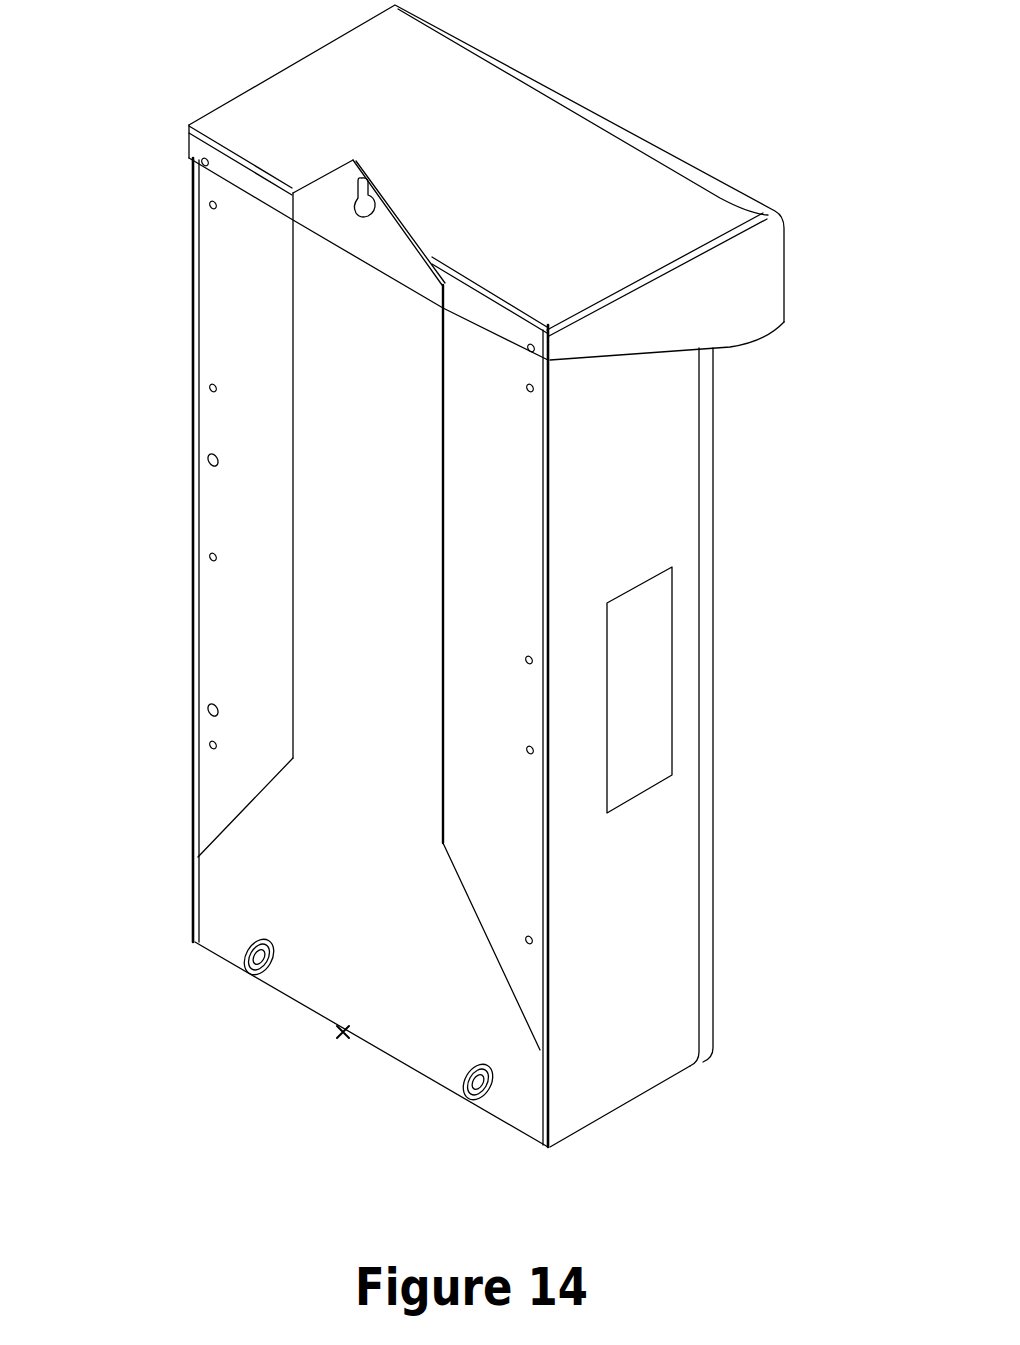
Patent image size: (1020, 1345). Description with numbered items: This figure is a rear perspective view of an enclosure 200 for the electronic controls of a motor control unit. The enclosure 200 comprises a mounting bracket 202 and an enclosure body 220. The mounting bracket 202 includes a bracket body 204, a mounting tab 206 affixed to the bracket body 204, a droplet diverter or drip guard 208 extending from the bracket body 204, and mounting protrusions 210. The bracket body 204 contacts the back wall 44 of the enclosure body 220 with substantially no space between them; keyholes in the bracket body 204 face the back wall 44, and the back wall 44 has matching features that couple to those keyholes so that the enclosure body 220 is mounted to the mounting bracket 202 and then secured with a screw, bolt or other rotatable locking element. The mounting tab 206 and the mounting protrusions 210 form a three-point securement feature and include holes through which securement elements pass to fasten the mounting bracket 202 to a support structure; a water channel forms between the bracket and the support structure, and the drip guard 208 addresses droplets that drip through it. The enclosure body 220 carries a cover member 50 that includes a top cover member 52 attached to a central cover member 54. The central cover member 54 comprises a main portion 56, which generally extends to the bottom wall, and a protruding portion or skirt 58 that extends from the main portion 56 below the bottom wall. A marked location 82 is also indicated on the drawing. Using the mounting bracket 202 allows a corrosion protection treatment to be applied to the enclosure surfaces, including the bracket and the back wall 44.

The enclosure 200 is at (102, 90).
The enclosure body 220 is at (198, 101).
The mounting tab 206 is at (327, 225).
The mounting bracket 202 is at (285, 283).
The bracket body 204 is at (305, 392).
The back wall 44 is at (253, 476).
The top cover member 52 is at (698, 197).
The cover member 50 is at (822, 163).
The central cover member 54 is at (710, 466).
The main portion 56 is at (658, 941).
The protruding portion or skirt 58 is at (658, 1067).
The droplet diverter or drip guard 208 is at (223, 930).
The mounting protrusions 210 is at (455, 1083).
The mounting location marker 82 is at (343, 1040).